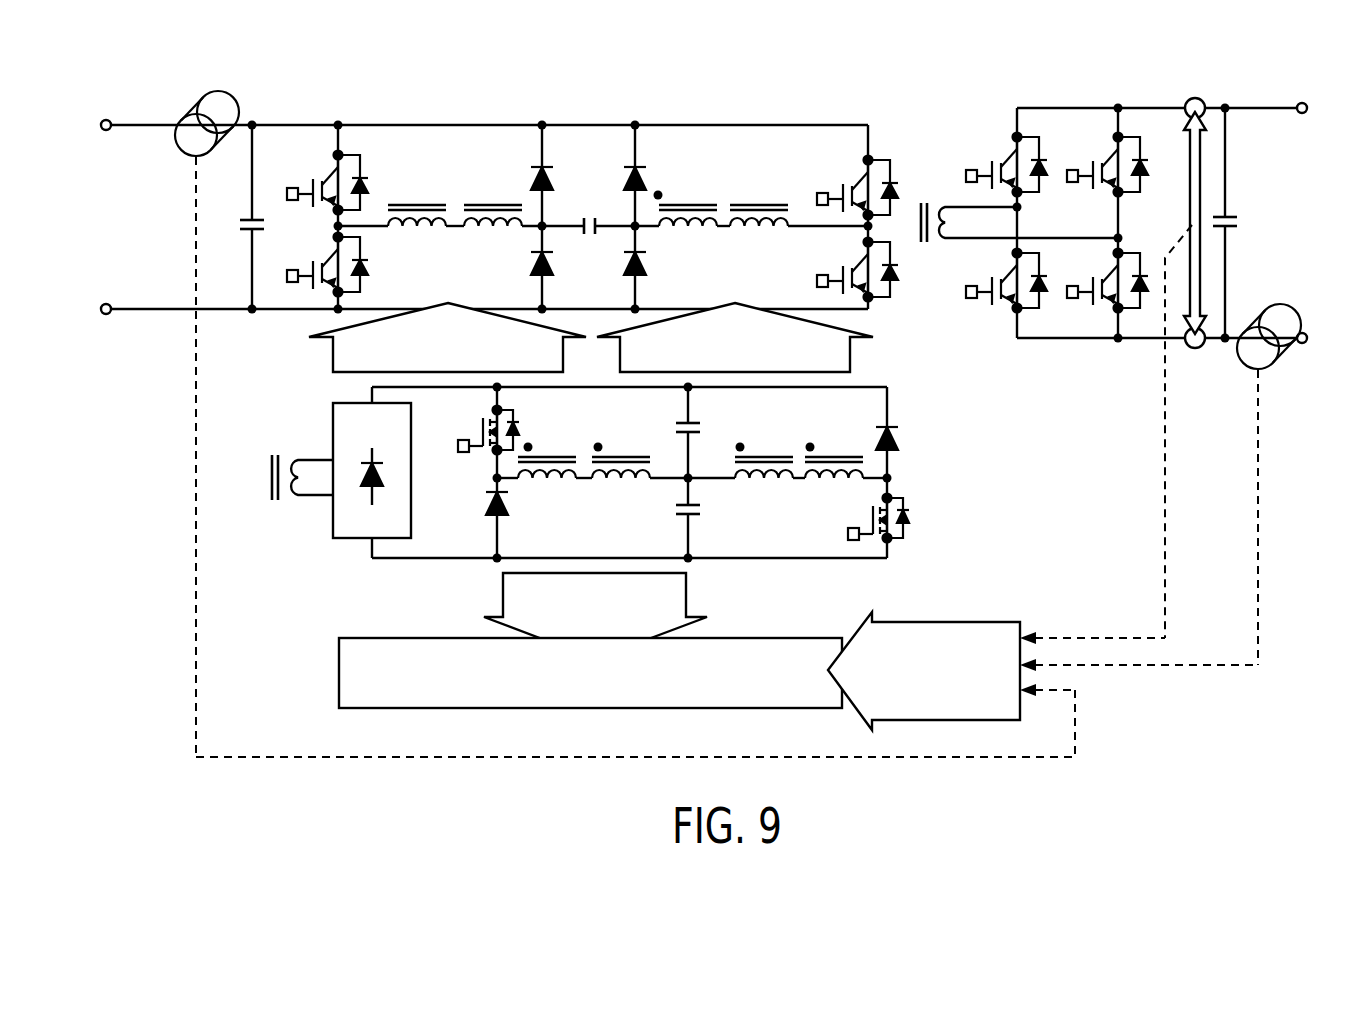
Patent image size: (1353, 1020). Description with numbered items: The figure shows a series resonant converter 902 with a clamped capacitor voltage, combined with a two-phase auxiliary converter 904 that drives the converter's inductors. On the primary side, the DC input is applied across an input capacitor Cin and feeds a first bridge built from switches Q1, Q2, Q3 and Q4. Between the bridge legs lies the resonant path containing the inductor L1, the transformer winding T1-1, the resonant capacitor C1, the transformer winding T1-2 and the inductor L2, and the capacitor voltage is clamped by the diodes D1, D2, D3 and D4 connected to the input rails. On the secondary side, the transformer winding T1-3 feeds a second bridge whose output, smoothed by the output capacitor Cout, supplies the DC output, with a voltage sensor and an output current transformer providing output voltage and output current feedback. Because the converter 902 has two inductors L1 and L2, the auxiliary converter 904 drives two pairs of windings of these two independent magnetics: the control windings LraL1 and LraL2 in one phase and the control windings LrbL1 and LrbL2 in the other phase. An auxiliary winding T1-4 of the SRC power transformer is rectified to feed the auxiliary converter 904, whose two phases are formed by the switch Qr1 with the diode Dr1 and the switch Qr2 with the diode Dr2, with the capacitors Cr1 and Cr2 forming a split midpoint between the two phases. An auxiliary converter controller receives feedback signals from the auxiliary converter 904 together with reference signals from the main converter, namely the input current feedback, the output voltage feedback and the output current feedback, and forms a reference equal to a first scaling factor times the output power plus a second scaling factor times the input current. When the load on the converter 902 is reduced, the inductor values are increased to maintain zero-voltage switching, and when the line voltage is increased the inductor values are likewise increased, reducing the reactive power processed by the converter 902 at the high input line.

The series resonant converter 902 is at (496, 72).
The two-phase auxiliary converter 904 is at (249, 461).
The primary bridge switch Q1 is at (327, 178).
The primary bridge switch Q2 is at (327, 265).
The primary bridge switch Q3 is at (857, 177).
The primary bridge switch Q4 is at (857, 266).
The diode D1 is at (535, 165).
The diode D2 is at (535, 256).
The diode D3 is at (628, 165).
The diode D4 is at (628, 256).
The inductor L1 is at (417, 201).
The inductor L2 is at (759, 201).
The resonant capacitor C1 is at (591, 215).
The input capacitor Cin is at (240, 217).
The output capacitor Cout is at (1244, 223).
The transformer winding T1-1 is at (493, 201).
The transformer winding T1-2 is at (686, 201).
The transformer secondary winding T1-3 is at (1019, 209).
The transformer auxiliary winding T1-4 is at (302, 462).
The auxiliary converter switch Qr1 is at (484, 427).
The auxiliary converter switch Qr2 is at (861, 522).
The auxiliary converter diode Dr1 is at (487, 513).
The auxiliary converter diode Dr2 is at (875, 429).
The auxiliary resonant capacitor Cr1 is at (698, 432).
The auxiliary resonant capacitor Cr2 is at (698, 518).
The control winding LraL1 is at (547, 475).
The control winding LraL2 is at (621, 475).
The control winding LrbL1 is at (764, 475).
The control winding LrbL2 is at (834, 475).